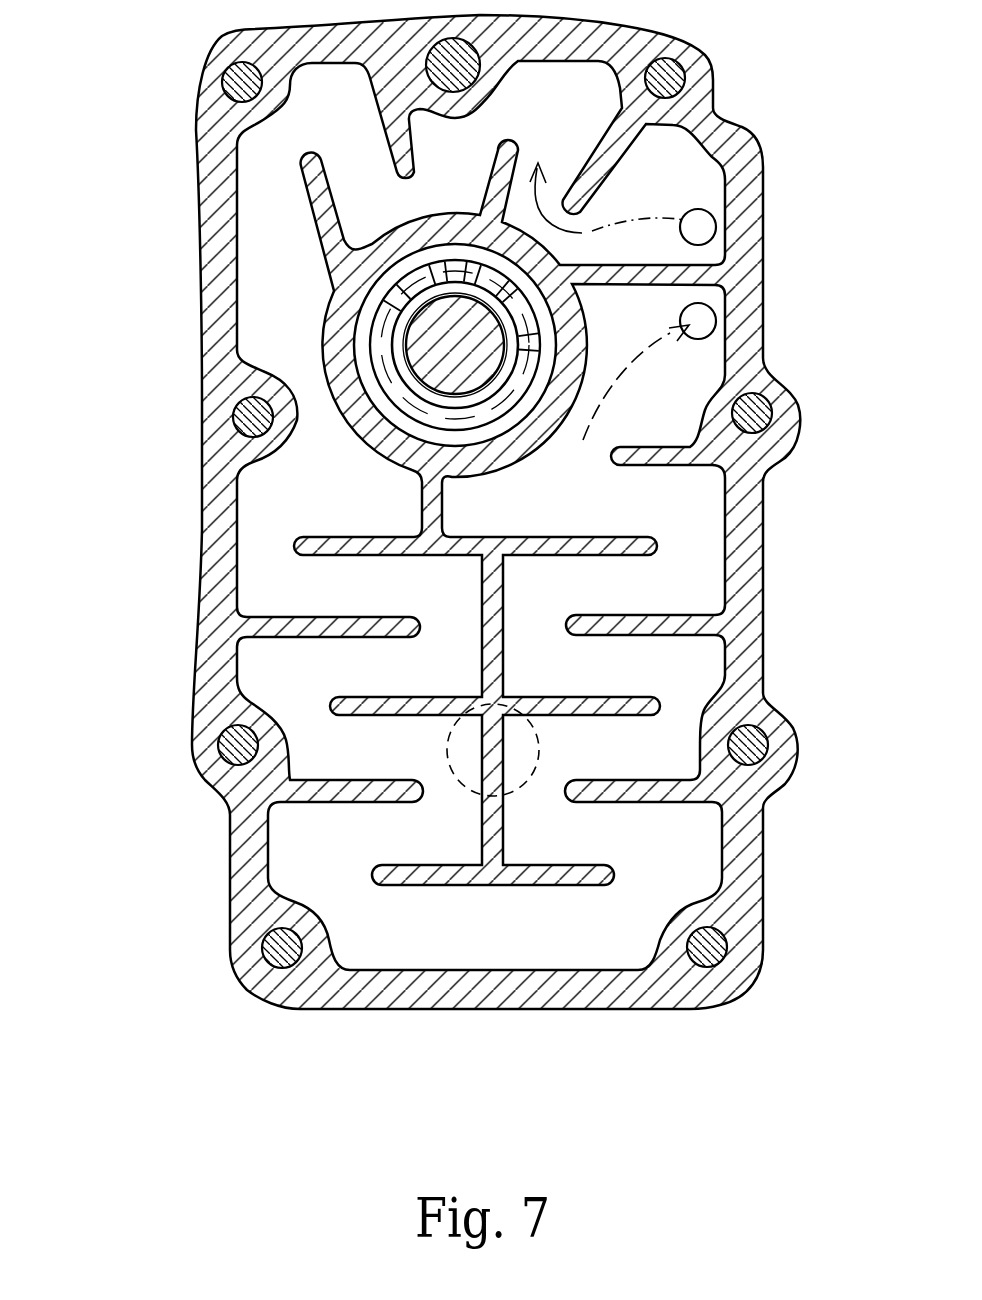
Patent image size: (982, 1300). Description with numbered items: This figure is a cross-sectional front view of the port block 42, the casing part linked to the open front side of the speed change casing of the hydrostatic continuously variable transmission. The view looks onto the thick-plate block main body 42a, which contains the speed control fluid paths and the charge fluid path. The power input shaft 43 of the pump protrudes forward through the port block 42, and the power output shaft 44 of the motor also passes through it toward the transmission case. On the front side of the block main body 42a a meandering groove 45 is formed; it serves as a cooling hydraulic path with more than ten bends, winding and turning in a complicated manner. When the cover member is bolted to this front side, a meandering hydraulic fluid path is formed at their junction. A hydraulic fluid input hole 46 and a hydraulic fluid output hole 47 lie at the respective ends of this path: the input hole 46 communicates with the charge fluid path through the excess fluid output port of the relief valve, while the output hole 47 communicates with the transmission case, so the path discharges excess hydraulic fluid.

The port block 42 is at (405, 512).
The block main body 42a is at (200, 510).
The power input shaft 43 is at (412, 337).
The power output shaft 44 is at (447, 748).
The meandering groove 45 is at (658, 663).
The hydraulic fluid input hole 46 is at (716, 222).
The hydraulic fluid output hole 47 is at (716, 322).